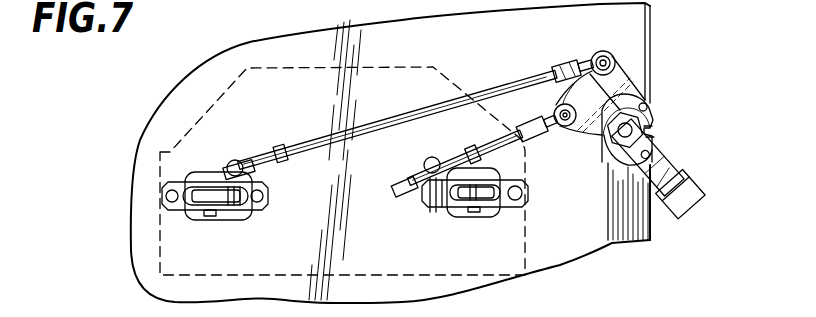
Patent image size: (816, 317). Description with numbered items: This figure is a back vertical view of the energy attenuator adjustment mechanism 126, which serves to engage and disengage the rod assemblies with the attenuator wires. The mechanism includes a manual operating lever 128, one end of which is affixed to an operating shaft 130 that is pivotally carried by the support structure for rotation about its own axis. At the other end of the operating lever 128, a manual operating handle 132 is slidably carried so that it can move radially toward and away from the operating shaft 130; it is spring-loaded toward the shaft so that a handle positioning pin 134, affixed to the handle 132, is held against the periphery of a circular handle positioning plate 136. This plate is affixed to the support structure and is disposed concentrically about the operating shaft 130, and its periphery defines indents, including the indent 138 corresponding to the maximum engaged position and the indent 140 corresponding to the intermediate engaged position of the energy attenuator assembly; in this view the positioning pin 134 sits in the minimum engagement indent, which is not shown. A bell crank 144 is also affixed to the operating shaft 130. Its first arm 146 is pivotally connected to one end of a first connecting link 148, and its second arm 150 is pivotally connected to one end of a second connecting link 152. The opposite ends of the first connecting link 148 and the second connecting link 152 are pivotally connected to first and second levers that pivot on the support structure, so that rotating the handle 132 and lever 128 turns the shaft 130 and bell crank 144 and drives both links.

The energy attenuator adjustment mechanism 126 is at (599, 198).
The manual operating lever 128 is at (628, 150).
The operating shaft 130 is at (617, 134).
The manual operating handle 132 is at (666, 207).
The handle positioning pin 134 is at (660, 157).
The circular handle positioning plate 136 is at (612, 155).
The indent 138 is at (645, 103).
The indent 140 is at (655, 130).
The bell crank 144 is at (589, 103).
The first arm 146 is at (553, 76).
The first connecting link 148 is at (491, 151).
The second arm 150 is at (616, 75).
The second connecting link 152 is at (327, 145).